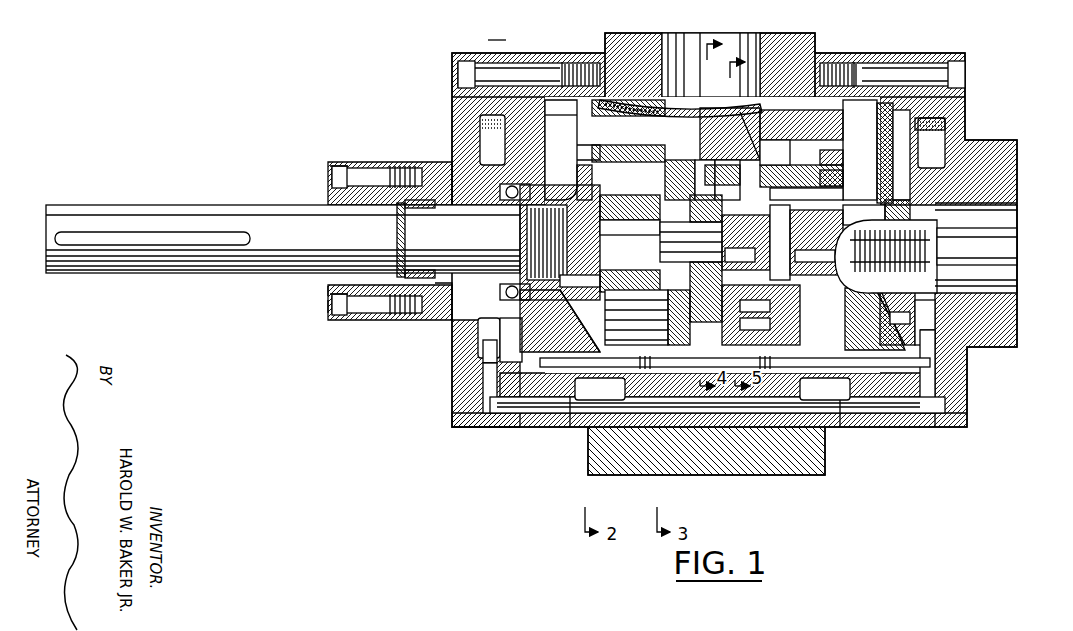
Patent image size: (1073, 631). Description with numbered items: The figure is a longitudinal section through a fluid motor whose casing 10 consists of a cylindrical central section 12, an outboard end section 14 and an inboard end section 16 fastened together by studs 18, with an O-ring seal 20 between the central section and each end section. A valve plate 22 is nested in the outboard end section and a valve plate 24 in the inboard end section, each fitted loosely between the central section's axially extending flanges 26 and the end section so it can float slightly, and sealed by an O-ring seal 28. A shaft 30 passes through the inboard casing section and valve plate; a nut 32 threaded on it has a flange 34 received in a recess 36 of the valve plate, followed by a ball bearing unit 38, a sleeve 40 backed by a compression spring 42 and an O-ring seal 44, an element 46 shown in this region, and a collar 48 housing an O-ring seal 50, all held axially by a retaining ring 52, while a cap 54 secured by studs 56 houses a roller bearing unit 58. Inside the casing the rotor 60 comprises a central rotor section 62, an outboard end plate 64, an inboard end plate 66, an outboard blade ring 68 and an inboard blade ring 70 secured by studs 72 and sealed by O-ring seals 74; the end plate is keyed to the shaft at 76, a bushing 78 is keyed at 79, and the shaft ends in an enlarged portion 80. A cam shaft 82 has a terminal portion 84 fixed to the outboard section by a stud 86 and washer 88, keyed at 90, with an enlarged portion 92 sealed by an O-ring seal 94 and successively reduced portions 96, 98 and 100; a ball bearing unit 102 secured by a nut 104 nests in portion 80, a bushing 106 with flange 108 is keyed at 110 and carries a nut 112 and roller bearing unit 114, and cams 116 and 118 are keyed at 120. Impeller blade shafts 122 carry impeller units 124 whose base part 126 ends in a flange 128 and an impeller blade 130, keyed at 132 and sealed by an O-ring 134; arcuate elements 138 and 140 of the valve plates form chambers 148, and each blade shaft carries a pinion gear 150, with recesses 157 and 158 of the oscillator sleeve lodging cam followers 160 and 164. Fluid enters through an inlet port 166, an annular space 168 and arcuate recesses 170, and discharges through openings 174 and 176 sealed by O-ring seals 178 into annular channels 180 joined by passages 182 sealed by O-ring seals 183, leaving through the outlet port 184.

The casing 10 is at (497, 31).
The central section 12 is at (609, 40).
The outboard end section 14 is at (896, 55).
The inboard end section 16 is at (452, 98).
The studs 18 is at (456, 74).
The O-ring seal 20 is at (576, 104).
The valve plate 22 is at (931, 143).
The valve plate 24 is at (525, 134).
The flanges 26 is at (712, 389).
The O-ring seal 28 is at (570, 405).
The shaft 30 is at (224, 205).
The nut 32 is at (568, 198).
The flange 34 is at (540, 302).
The recess 36 is at (511, 340).
The ball bearing unit 38 is at (489, 338).
The sleeve 40 is at (440, 305).
The compression spring 42 is at (445, 165).
The O-ring seal 44 is at (478, 192).
The groove 46 is at (586, 152).
The collar 48 is at (430, 195).
The O-ring seal 50 is at (420, 282).
The retaining ring 52 is at (400, 282).
The cap 54 is at (334, 312).
The studs 56 is at (330, 302).
The roller bearing unit 58 is at (330, 287).
The rotor 60 is at (720, 110).
The central rotor section 62 is at (742, 114).
The outboard end plate 64 is at (780, 105).
The inboard end plate 66 is at (668, 106).
The outboard blade ring 68 is at (878, 140).
The inboard blade ring 70 is at (578, 128).
The studs 72 is at (890, 347).
The O-ring seal 74 is at (644, 368).
The key 76 is at (632, 212).
The bushing 78 is at (634, 233).
The key 79 is at (584, 280).
The enlarged terminal portion 80 is at (648, 285).
The cam shaft 82 is at (900, 210).
The terminal portion 84 is at (885, 294).
The stud 86 is at (975, 242).
The washer 88 is at (958, 276).
The key 90 is at (935, 223).
The enlarged diameter portion 92 is at (854, 312).
The O-ring seal 94 is at (890, 320).
The cam shaft portion 96 is at (836, 226).
The cam shaft portion 98 is at (795, 236).
The cam shaft section 100 is at (724, 240).
The ball bearing unit 102 is at (678, 233).
The nut 104 is at (680, 250).
The bushing 106 is at (832, 185).
The flange 108 is at (828, 160).
The key 110 is at (795, 195).
The nut 112 is at (788, 262).
The roller bearing unit 114 is at (796, 266).
The cam 116 is at (700, 165).
The cam 118 is at (718, 170).
The key 120 is at (728, 258).
The impeller blade shafts 122 is at (758, 150).
The impeller unit 124 is at (775, 165).
The base part 126 is at (790, 160).
The flange 128 is at (730, 170).
The impeller blade 130 is at (905, 155).
The key 132 is at (630, 162).
The O-ring 134 is at (612, 150).
The arcuately shaped element 138 is at (905, 130).
The arcuately shaped element 140 is at (743, 235).
The chamber 148 is at (607, 306).
The pinion gear 150 is at (680, 158).
The recess 157 is at (716, 336).
The recess 158 is at (748, 312).
The cam follower 160 is at (748, 328).
The cam follower 164 is at (724, 300).
The inlet port 166 is at (728, 40).
The annular space 168 is at (662, 100).
The arcuate recesses 170 is at (565, 88).
The openings 174 is at (578, 344).
The openings 176 is at (935, 326).
The O-ring seals 178 is at (485, 376).
The annular channels 180 is at (490, 360).
The passages 182 is at (490, 396).
The O-ring seals 183 is at (570, 440).
The fluid outlet port 184 is at (1019, 252).